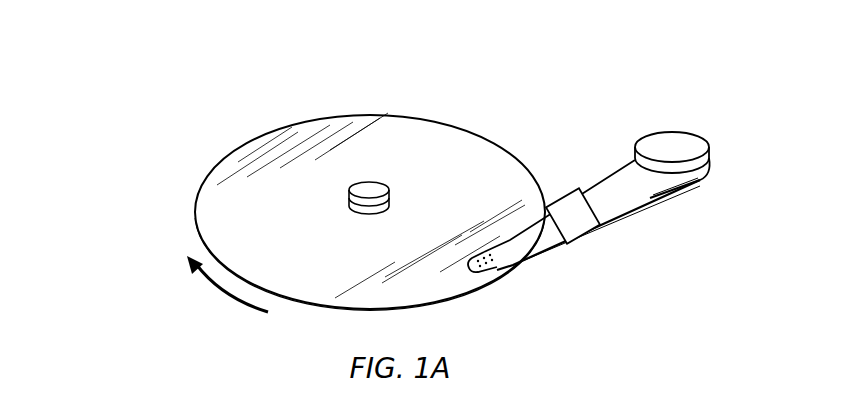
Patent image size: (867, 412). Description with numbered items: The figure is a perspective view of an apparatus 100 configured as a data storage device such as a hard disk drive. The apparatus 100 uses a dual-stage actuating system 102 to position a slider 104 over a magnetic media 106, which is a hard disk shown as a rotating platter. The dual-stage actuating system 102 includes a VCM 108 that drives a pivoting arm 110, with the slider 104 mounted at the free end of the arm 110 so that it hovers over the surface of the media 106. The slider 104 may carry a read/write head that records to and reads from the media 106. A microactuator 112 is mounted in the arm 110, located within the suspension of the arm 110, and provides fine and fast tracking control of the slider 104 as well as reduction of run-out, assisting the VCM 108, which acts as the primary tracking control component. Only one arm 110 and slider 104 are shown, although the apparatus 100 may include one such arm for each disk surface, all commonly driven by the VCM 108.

The apparatus 100 is at (163, 100).
The dual-stage actuating system 102 is at (662, 105).
The slider 104 is at (481, 251).
The magnetic media 106 is at (414, 128).
The VCM 108 is at (678, 143).
The arm 110 is at (682, 194).
The microactuator 112 is at (573, 215).